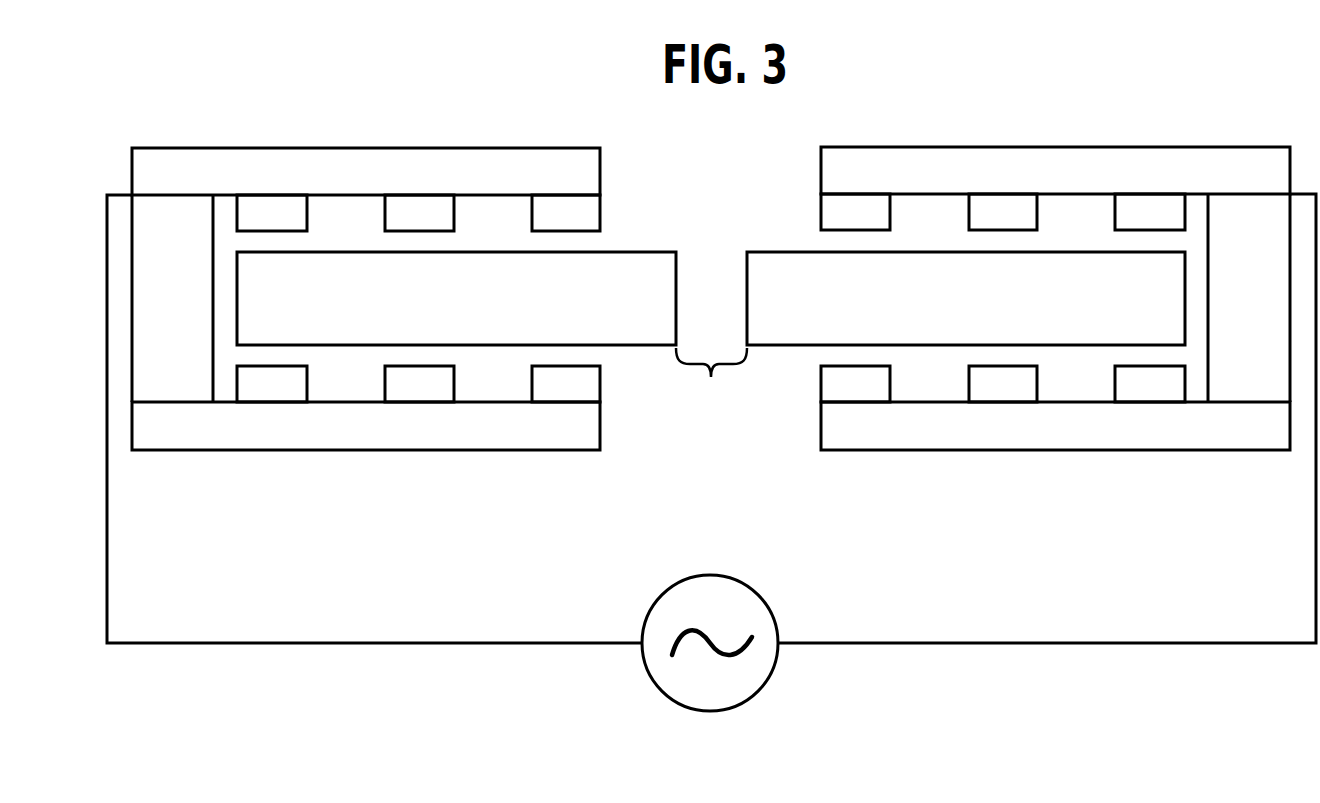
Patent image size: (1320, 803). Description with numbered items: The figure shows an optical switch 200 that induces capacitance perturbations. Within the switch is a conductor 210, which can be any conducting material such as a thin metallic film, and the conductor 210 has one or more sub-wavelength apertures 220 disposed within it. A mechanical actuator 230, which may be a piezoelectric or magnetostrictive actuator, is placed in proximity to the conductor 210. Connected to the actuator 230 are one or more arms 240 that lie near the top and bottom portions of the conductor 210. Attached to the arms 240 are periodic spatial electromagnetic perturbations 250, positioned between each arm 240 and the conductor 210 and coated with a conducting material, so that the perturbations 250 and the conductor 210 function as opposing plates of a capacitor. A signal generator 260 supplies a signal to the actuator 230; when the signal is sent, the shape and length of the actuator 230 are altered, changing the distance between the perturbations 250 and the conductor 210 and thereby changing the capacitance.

The optical switch 200 is at (208, 118).
The conductor 210 is at (485, 308).
The sub-wavelength aperture 220 is at (711, 382).
The mechanical actuator 230 is at (185, 393).
The arm 240 is at (582, 172).
The periodic spatial electromagnetic perturbation 250 is at (275, 207).
The signal generator 260 is at (705, 573).